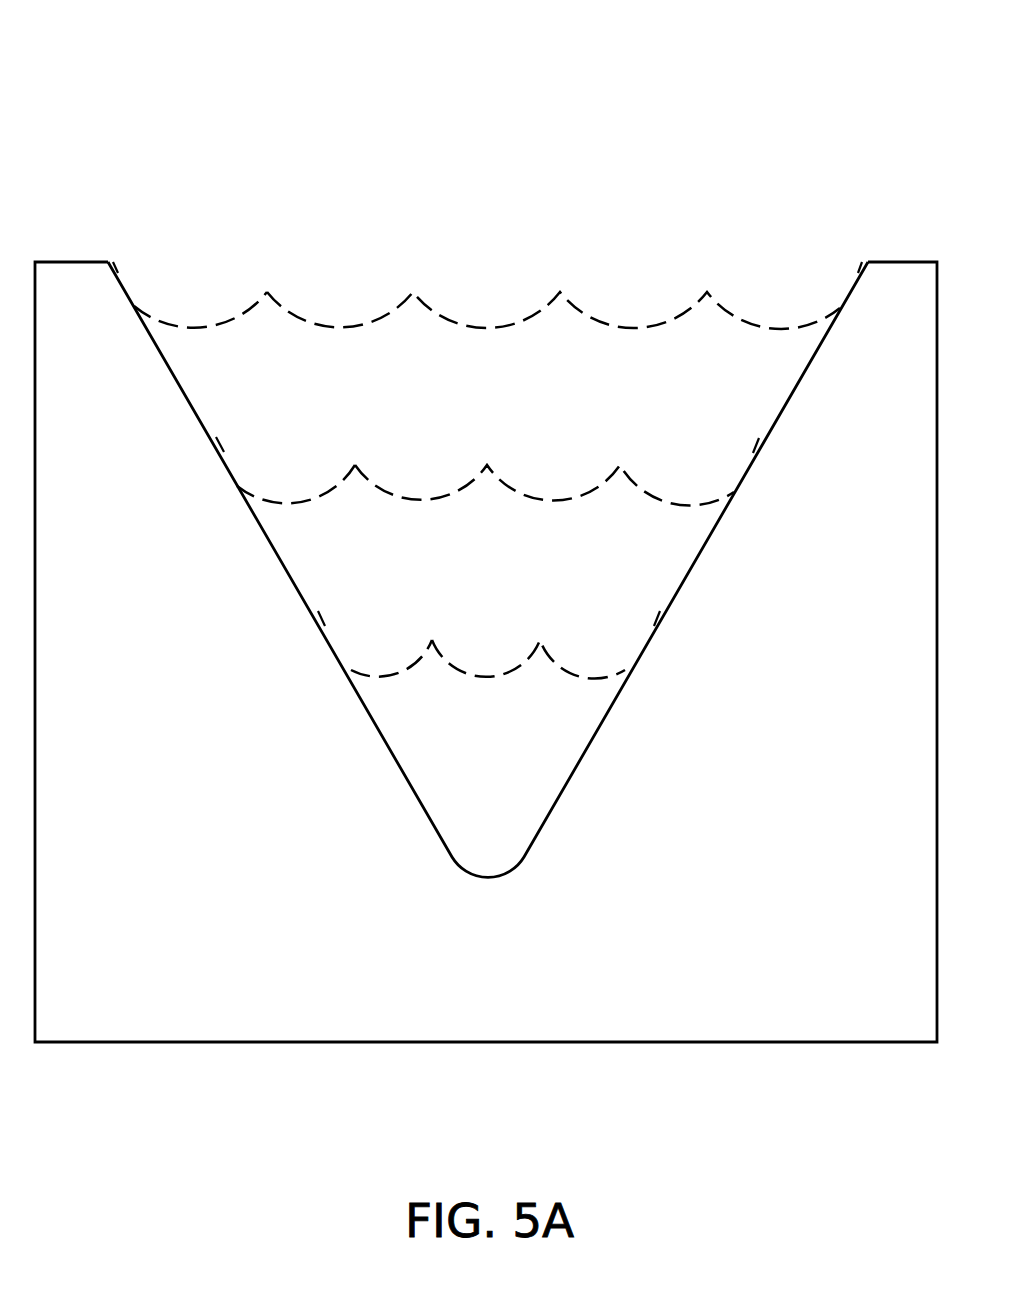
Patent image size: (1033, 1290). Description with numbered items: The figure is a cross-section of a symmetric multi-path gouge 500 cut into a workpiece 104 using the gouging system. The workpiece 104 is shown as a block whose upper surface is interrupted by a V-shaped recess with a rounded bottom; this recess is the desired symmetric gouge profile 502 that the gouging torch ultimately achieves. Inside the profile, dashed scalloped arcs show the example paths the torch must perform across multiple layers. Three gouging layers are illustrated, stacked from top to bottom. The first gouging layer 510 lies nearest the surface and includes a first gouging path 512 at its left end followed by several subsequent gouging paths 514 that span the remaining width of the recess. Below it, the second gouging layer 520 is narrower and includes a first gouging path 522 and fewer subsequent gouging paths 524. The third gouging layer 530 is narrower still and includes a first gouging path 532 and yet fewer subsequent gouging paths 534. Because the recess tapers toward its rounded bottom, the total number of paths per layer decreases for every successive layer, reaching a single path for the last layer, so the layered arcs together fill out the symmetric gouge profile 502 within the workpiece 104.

The symmetric multi-path gouge 500 is at (243, 50).
The workpiece 104 is at (748, 1043).
The symmetric gouge profile 502 is at (537, 845).
The first gouging layer 510 is at (477, 276).
The first gouging path 512 is at (197, 330).
The subsequent gouging paths 514 is at (822, 372).
The second gouging layer 520 is at (484, 508).
The first gouging path 522 is at (309, 497).
The subsequent gouging paths 524 is at (709, 497).
The third gouging layer 530 is at (486, 631).
The first gouging path 532 is at (376, 677).
The subsequent gouging paths 534 is at (640, 717).